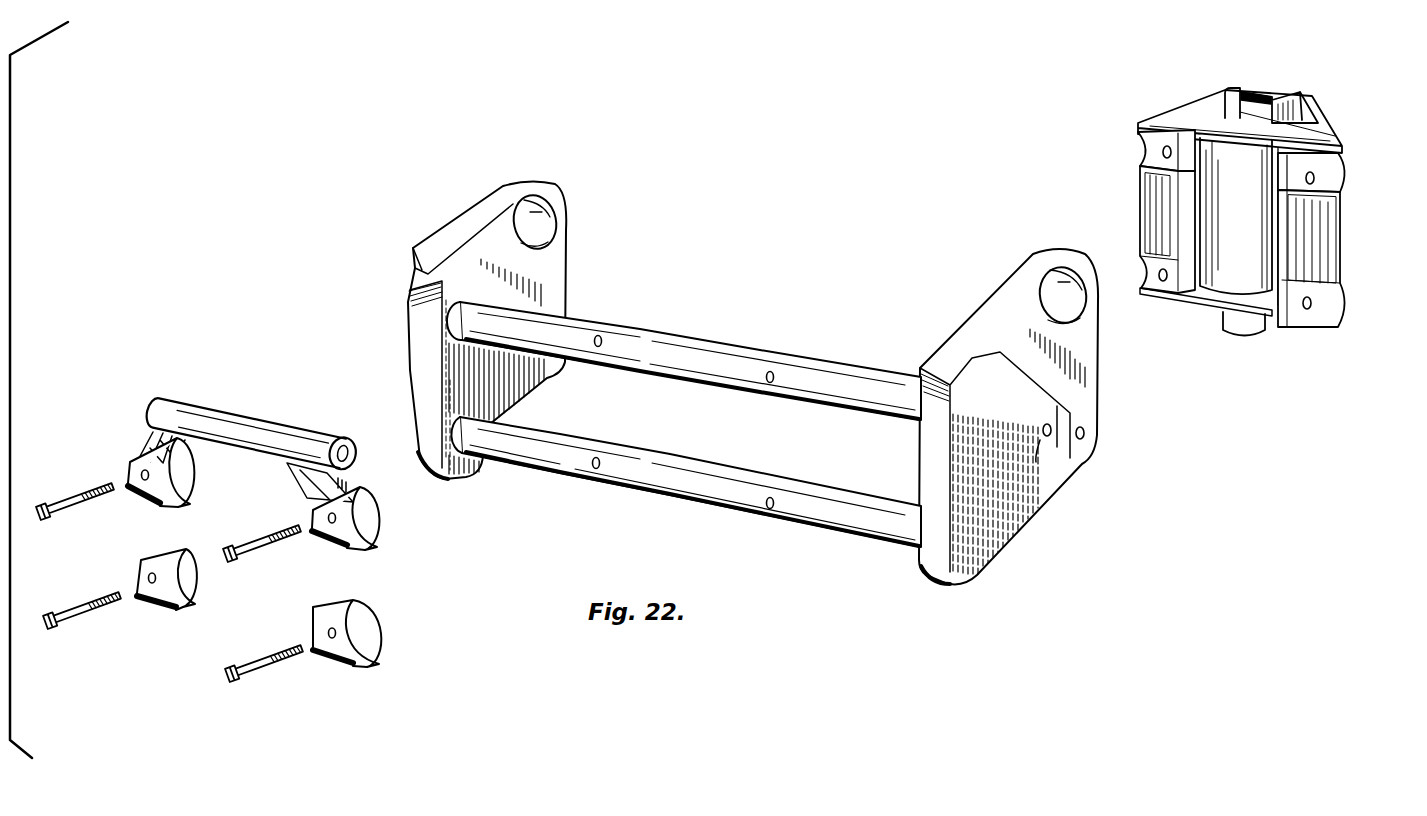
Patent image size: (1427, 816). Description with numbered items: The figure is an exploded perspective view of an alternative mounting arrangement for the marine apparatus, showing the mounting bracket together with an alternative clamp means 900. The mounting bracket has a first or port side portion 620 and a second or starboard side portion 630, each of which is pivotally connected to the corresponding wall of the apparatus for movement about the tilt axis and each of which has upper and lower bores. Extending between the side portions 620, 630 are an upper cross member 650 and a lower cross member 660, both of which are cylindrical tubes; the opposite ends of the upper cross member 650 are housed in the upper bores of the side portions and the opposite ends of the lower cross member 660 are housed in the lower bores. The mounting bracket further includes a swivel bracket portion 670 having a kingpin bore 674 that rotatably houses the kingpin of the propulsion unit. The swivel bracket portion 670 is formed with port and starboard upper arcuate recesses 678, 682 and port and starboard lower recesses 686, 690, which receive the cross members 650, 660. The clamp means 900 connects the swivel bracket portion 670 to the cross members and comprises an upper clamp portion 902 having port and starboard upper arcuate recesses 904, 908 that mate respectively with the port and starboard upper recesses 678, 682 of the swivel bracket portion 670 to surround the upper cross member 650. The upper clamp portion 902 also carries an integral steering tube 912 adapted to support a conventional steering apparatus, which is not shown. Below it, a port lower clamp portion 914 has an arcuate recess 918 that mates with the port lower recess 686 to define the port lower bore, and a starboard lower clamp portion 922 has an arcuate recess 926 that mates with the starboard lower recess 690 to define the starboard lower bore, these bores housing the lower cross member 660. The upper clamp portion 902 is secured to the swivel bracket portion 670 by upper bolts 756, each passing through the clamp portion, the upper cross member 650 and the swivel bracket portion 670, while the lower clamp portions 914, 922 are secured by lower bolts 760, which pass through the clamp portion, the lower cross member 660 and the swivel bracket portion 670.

The port side portion 620 is at (981, 537).
The starboard side portion 630 is at (408, 298).
The upper cross member 650 is at (717, 349).
The lower cross member 660 is at (676, 468).
The swivel bracket portion 670 is at (1318, 136).
The kingpin bore 674 is at (1266, 98).
The port upper arcuate recess 678 is at (1328, 183).
The starboard upper arcuate recess 682 is at (1150, 140).
The port lower recess 686 is at (1330, 293).
The starboard lower recess 690 is at (1147, 264).
The clamp means 900 is at (118, 411).
The upper clamp portion 902 is at (226, 390).
The port upper arcuate recess 904 is at (365, 531).
The starboard upper arcuate recess 908 is at (180, 492).
The steering tube 912 is at (287, 423).
The port lower clamp portion 914 is at (320, 607).
The arcuate recess 918 is at (369, 643).
The starboard lower clamp portion 922 is at (134, 563).
The arcuate recess 926 is at (189, 598).
The upper bolt 756 is at (46, 503).
The lower bolt 760 is at (53, 612).